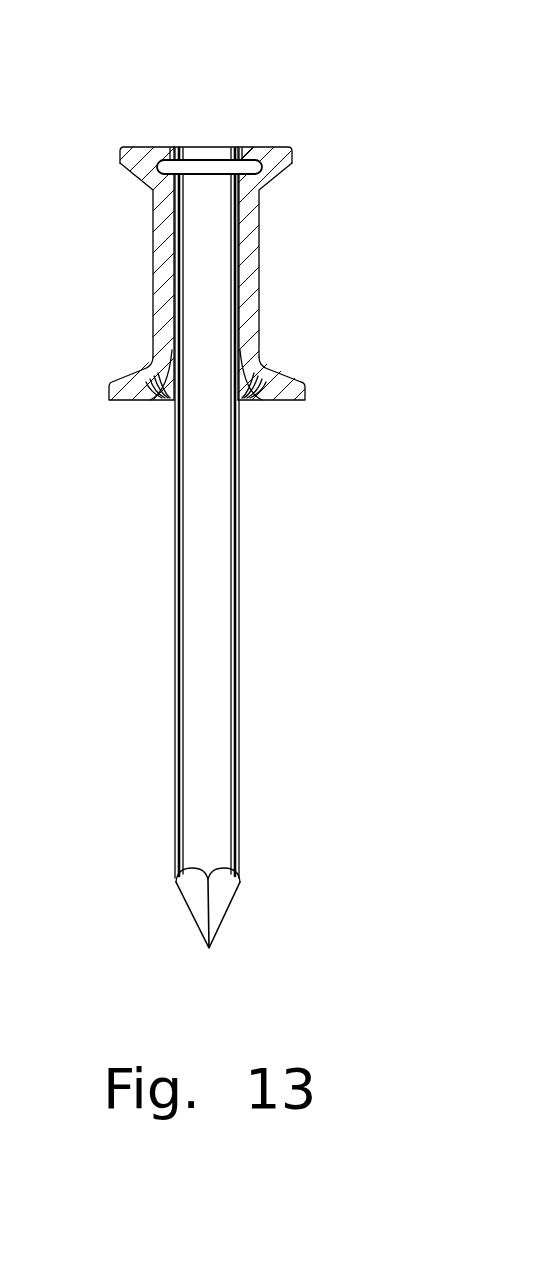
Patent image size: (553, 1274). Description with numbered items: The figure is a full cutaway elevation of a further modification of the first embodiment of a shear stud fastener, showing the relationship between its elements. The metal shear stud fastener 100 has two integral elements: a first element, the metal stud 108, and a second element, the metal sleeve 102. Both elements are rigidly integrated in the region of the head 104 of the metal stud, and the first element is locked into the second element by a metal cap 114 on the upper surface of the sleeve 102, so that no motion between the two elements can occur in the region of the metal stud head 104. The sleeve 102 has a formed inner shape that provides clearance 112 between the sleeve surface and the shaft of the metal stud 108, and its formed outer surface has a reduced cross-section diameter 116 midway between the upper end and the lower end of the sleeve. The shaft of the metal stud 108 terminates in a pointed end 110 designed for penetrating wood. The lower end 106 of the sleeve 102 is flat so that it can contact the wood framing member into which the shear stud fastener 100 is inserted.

The metal shear stud fastener 100 is at (295, 155).
The metal sleeve 102 is at (135, 145).
The head of the metal stud 104 is at (222, 168).
The lower end of the sleeve 106 is at (273, 382).
The metal stud 108 is at (219, 725).
The pointed end 110 is at (222, 895).
The clearance 112 is at (250, 370).
The metal cap 114 is at (168, 153).
The reduced cross-section diameter 116 is at (152, 268).